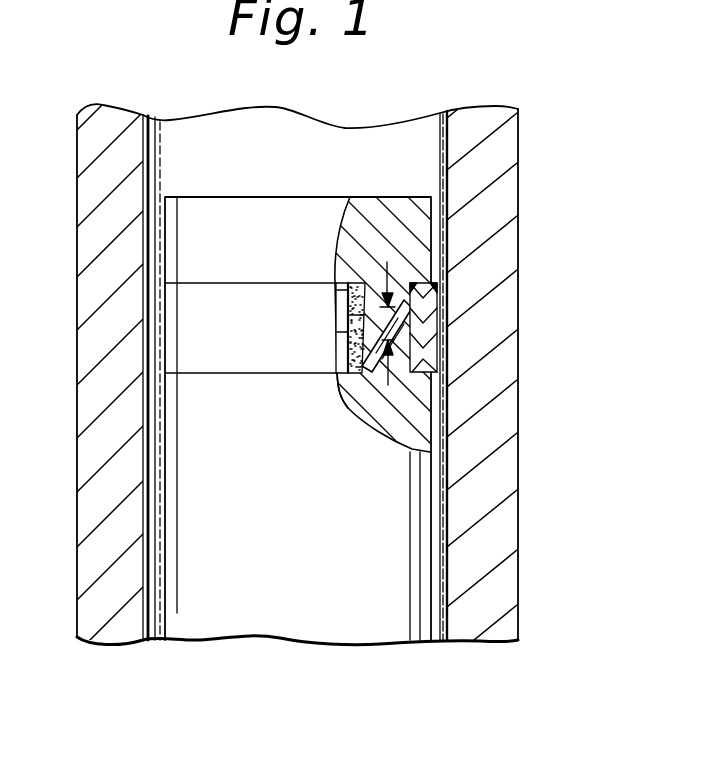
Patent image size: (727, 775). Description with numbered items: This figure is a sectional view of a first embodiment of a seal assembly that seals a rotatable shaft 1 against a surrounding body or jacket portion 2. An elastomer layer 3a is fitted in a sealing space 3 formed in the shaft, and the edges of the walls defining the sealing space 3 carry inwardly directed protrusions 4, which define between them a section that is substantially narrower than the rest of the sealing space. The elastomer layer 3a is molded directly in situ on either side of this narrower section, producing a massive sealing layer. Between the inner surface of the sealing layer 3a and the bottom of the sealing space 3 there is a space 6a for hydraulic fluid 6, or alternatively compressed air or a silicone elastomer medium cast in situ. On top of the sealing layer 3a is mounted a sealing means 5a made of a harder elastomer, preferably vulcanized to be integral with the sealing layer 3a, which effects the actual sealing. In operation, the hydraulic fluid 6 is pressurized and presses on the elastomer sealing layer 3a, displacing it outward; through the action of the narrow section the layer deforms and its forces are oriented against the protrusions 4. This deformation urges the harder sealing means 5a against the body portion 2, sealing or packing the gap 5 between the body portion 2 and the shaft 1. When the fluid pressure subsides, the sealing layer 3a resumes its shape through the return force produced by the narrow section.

The rotatable shaft 1 is at (380, 546).
The body or jacket portion 2 is at (492, 368).
The sealing space 3 is at (380, 383).
The elastomer layer 3a is at (344, 318).
The inwardly directed protrusions 4 is at (402, 298).
The gap 5 is at (435, 423).
The sealing means 5a is at (430, 326).
The hydraulic fluid 6 is at (343, 350).
The space for hydraulic fluid 6a is at (349, 383).